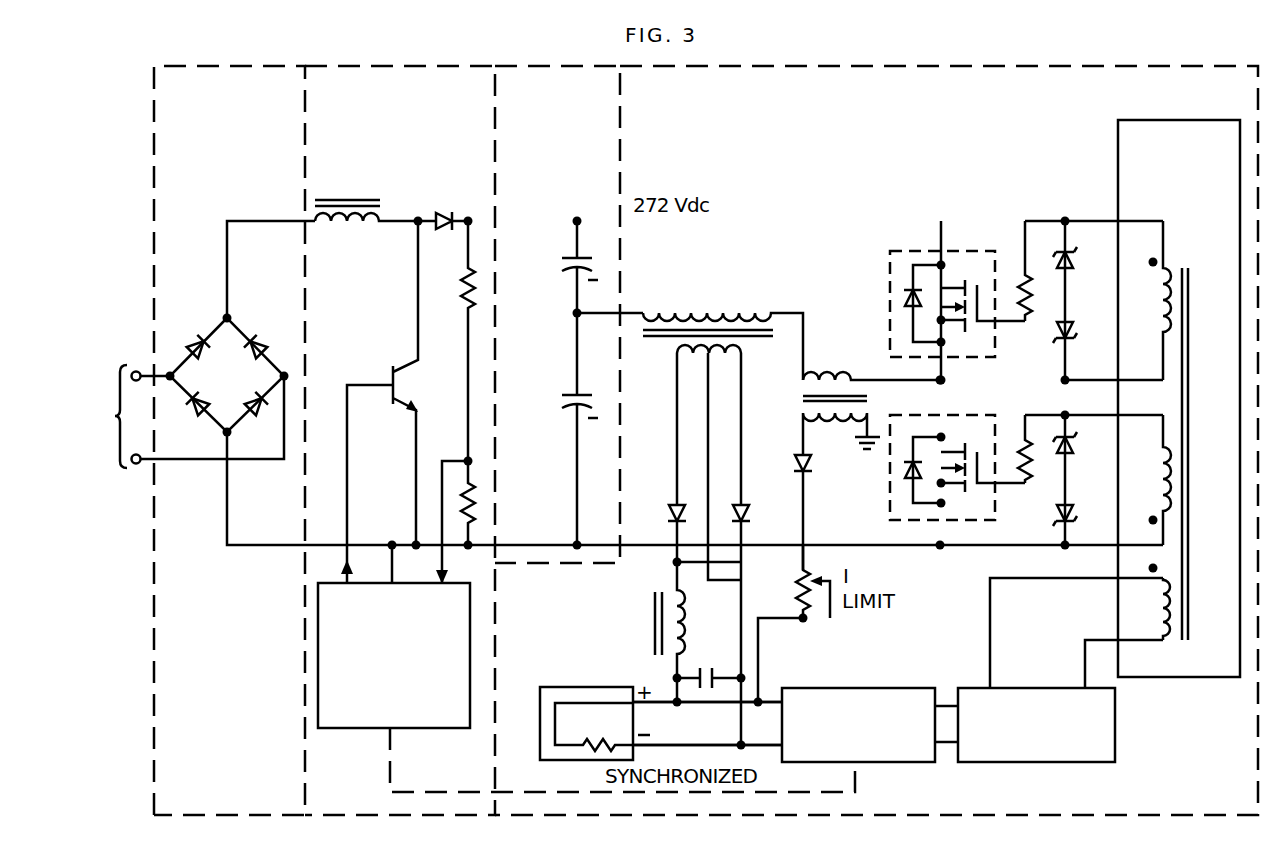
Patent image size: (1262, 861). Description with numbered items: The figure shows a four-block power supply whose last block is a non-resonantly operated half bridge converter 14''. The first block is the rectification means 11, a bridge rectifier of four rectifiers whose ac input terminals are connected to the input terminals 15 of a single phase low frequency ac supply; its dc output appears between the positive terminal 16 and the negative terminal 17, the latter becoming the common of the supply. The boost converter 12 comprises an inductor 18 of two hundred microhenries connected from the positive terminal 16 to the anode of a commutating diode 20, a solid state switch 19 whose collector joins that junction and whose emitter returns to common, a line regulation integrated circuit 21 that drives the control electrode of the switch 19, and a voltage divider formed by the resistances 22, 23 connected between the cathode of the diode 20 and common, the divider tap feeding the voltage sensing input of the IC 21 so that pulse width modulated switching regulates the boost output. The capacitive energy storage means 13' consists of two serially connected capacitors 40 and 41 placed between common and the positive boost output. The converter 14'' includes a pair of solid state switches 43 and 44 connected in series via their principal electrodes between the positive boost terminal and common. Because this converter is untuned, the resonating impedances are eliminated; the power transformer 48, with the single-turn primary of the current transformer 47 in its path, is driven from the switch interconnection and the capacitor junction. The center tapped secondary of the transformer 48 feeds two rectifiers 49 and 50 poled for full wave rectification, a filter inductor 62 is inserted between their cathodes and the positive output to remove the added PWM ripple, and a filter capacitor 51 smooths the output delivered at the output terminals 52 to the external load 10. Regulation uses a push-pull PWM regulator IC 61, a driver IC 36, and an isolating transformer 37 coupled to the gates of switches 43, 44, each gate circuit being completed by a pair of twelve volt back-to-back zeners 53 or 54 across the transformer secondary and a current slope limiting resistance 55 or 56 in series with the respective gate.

The external load 10 is at (566, 682).
The rectification means 11 is at (238, 170).
The boost converter 12 is at (410, 150).
The capacitive energy storage means 13' is at (557, 314).
The non-resonant half bridge converter 14'' is at (876, 440).
The input terminals 15 is at (138, 383).
The positive terminal 16 is at (227, 236).
The negative terminal 17 is at (227, 523).
The inductor 18 is at (331, 196).
The solid state switch 19 is at (391, 408).
The commutating diode 20 is at (441, 232).
The line regulation integrated circuit 21 is at (352, 733).
The resistance 22 is at (463, 298).
The resistance 23 is at (465, 483).
The driver IC 36 is at (1118, 738).
The isolating transformer 37 is at (1192, 214).
The capacitor 40 is at (566, 258).
The capacitor 41 is at (566, 394).
The solid state switch 43 is at (963, 246).
The solid state switch 44 is at (889, 473).
The current transformer 47 is at (802, 395).
The power transformer 48 is at (651, 343).
The rectifier 49 is at (669, 514).
The rectifier 50 is at (751, 519).
The filter capacitor 51 is at (712, 662).
The output terminals 52 is at (735, 743).
The back-to-back zeners 53 is at (1070, 266).
The back-to-back zeners 54 is at (1070, 450).
The current slope limiting resistance 55 is at (1029, 313).
The resistor 56 is at (1029, 478).
The regulator IC 61 is at (916, 686).
The filter inductor 62 is at (655, 600).